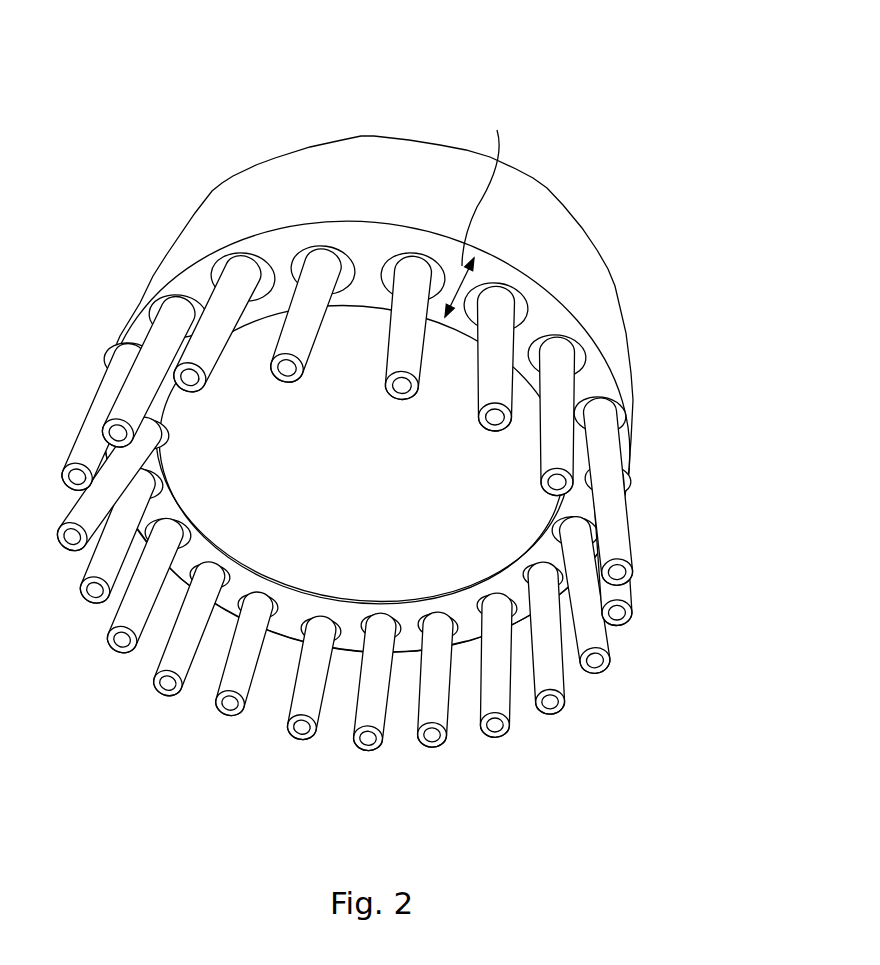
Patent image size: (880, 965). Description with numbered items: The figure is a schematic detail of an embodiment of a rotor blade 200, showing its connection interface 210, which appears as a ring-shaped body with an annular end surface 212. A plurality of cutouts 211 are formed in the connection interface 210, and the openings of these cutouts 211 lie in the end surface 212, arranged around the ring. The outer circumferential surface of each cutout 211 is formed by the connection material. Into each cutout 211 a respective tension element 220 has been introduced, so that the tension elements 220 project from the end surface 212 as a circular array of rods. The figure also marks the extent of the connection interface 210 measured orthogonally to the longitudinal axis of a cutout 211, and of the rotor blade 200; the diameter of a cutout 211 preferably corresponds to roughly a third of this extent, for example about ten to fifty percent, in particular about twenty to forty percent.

The rotor blade 200 is at (410, 381).
The connection interface 210 is at (419, 380).
The cutouts 211 is at (613, 400).
The end surface 212 is at (277, 242).
The tension element 220 is at (593, 640).